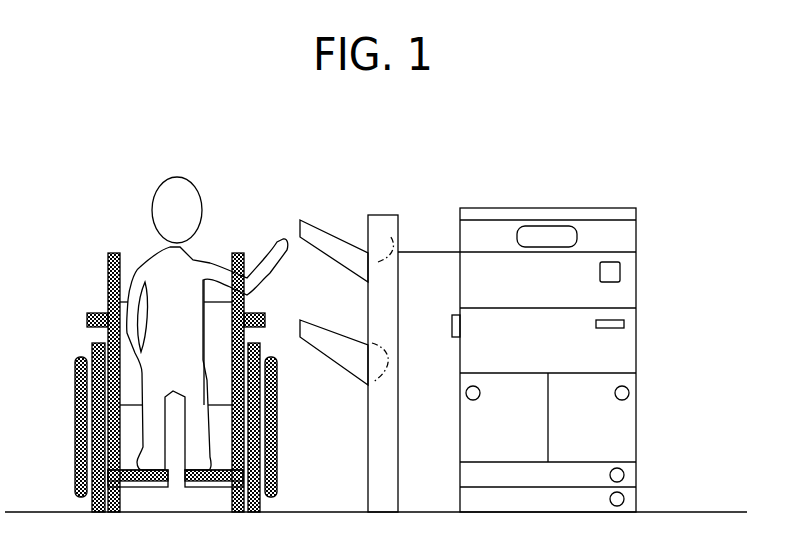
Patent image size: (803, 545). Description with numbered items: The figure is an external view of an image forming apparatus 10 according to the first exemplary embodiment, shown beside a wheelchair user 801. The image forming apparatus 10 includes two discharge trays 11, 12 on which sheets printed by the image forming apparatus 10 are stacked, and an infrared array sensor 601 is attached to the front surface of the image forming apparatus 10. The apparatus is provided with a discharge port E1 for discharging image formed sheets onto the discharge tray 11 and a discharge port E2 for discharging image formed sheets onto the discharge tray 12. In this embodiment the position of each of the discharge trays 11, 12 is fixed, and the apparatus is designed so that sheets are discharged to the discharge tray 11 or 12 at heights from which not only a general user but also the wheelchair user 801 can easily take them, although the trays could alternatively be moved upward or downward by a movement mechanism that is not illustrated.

The wheelchair user 801 is at (142, 262).
The discharge tray 11 is at (313, 222).
The discharge tray 12 is at (330, 332).
The discharge port E1 is at (389, 235).
The discharge port E2 is at (367, 388).
The image forming apparatus 10 is at (550, 208).
The infrared array sensor 601 is at (622, 272).